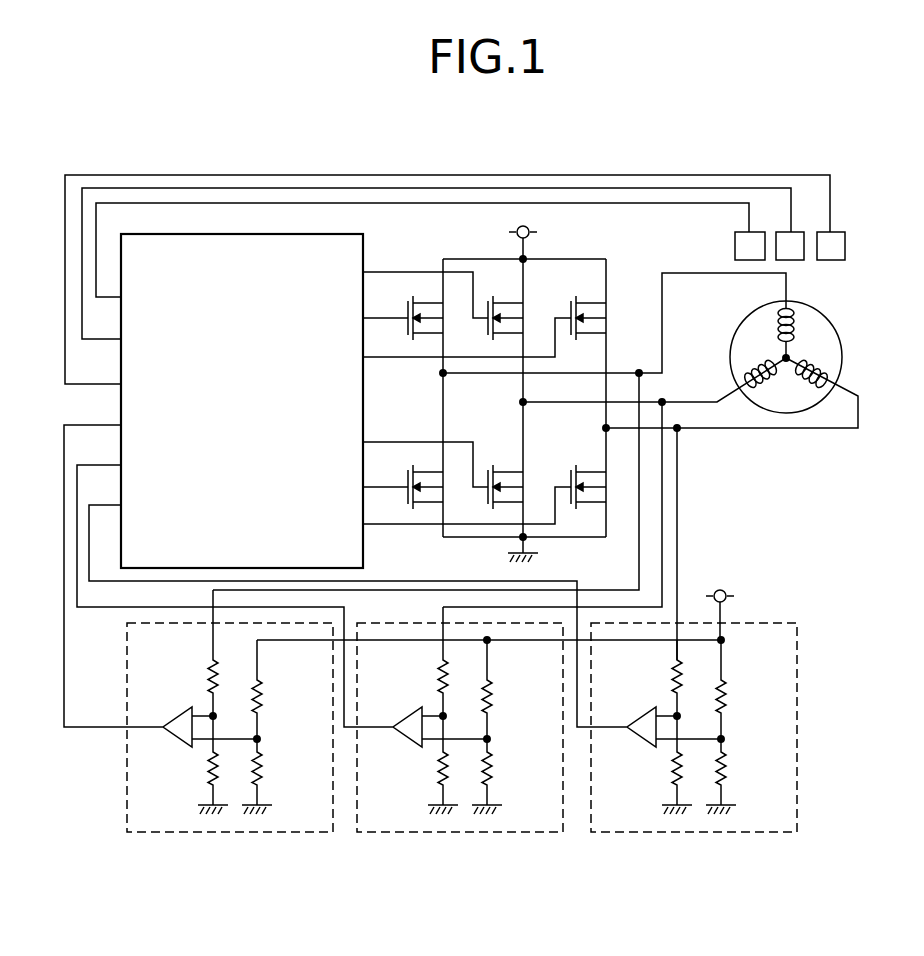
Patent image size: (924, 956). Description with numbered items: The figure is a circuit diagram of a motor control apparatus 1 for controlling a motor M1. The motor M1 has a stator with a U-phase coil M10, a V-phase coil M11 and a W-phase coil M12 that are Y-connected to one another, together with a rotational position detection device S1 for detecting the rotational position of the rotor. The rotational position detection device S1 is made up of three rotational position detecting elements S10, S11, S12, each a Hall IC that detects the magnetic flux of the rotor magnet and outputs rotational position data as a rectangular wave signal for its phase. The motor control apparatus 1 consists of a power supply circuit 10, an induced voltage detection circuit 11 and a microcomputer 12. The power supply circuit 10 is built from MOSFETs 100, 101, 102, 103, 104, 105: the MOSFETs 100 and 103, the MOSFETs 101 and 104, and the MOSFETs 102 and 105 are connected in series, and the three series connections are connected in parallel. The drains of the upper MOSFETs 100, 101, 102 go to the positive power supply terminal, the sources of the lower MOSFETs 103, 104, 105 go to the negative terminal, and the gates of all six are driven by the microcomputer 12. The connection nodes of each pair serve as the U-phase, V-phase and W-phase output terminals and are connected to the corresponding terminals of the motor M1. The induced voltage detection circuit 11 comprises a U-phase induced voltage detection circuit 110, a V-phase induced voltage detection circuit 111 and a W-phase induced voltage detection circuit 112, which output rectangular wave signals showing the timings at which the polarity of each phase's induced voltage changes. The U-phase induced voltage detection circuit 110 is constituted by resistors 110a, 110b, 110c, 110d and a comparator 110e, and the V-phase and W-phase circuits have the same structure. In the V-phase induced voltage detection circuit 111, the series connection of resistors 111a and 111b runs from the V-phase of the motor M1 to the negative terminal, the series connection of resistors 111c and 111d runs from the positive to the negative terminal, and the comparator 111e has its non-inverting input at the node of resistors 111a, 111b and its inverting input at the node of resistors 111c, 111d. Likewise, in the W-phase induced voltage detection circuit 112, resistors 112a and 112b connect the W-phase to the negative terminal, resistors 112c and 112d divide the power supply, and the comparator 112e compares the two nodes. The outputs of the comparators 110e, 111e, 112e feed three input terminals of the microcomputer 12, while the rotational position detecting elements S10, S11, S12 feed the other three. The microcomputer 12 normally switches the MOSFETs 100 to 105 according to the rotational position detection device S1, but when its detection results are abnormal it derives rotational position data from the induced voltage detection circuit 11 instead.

The motor control apparatus 1 is at (357, 170).
The power supply circuit 10 is at (573, 248).
The induced voltage detection circuit 11 is at (693, 575).
The microcomputer 12 is at (363, 248).
The MOSFET 100 is at (405, 327).
The MOSFET 101 is at (485, 327).
The MOSFET 102 is at (567, 312).
The MOSFET 103 is at (403, 495).
The MOSFET 104 is at (485, 495).
The MOSFET 105 is at (567, 480).
The U-phase induced voltage detection circuit 110 is at (182, 832).
The resistor 110a is at (205, 677).
The resistor 110b is at (207, 777).
The resistor 110c is at (263, 702).
The resistor 110d is at (263, 772).
The comparator 110e is at (178, 718).
The V-phase induced voltage detection circuit 111 is at (412, 832).
The resistor 111a is at (435, 677).
The resistor 111b is at (437, 777).
The resistor 111c is at (493, 702).
The resistor 111d is at (493, 772).
The comparator 111e is at (408, 718).
The W-phase induced voltage detection circuit 112 is at (646, 832).
The resistor 112a is at (669, 677).
The resistor 112b is at (671, 777).
The resistor 112c is at (727, 702).
The resistor 112d is at (727, 772).
The comparator 112e is at (642, 718).
The rotational position detection device S1 is at (847, 220).
The rotational position detecting element S10 is at (735, 248).
The rotational position detecting element S11 is at (783, 232).
The rotational position detecting element S12 is at (822, 232).
The motor M1 is at (833, 308).
The U-phase coil M10 is at (773, 328).
The V-phase coil M11 is at (748, 362).
The W-phase coil M12 is at (823, 358).